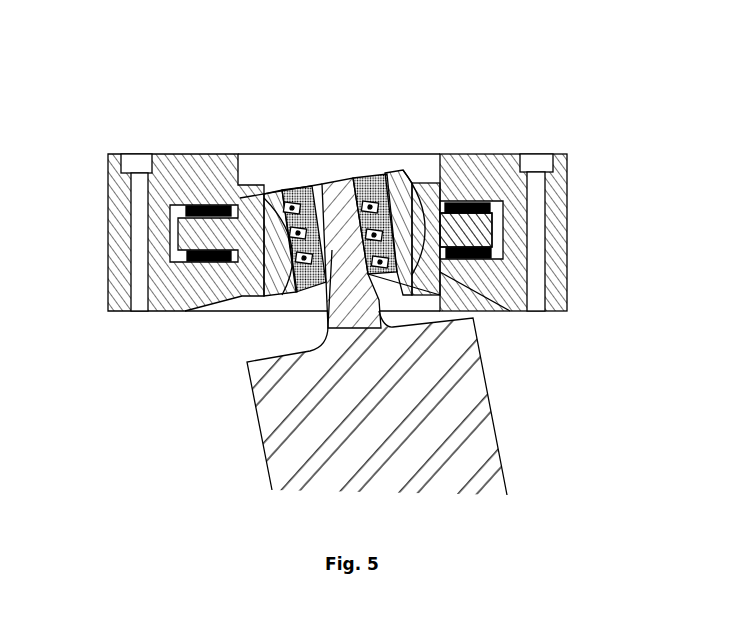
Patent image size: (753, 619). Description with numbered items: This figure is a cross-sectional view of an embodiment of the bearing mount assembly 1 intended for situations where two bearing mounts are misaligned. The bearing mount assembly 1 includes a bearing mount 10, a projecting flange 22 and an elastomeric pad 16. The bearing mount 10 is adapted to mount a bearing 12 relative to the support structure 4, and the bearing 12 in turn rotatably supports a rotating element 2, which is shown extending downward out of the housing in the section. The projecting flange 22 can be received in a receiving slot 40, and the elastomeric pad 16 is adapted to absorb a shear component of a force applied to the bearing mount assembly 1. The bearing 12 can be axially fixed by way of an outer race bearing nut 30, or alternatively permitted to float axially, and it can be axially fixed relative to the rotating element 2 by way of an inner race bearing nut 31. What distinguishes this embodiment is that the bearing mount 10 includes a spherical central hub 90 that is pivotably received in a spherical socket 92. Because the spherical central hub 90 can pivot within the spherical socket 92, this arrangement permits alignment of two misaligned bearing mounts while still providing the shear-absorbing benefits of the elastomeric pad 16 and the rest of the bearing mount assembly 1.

The bearing mount assembly 1 is at (362, 263).
The rotating element 2 is at (270, 458).
The support structure 4 is at (560, 188).
The bearing mount 10 is at (458, 236).
The bearing 12 is at (305, 283).
The elastomeric pad 16 is at (180, 248).
The projecting flange 22 is at (498, 221).
The outer race bearing nut 30 is at (384, 177).
The inner race bearing nut 31 is at (303, 188).
The receiving slot 40 is at (505, 266).
The spherical central hub 90 is at (415, 192).
The spherical socket 92 is at (272, 187).